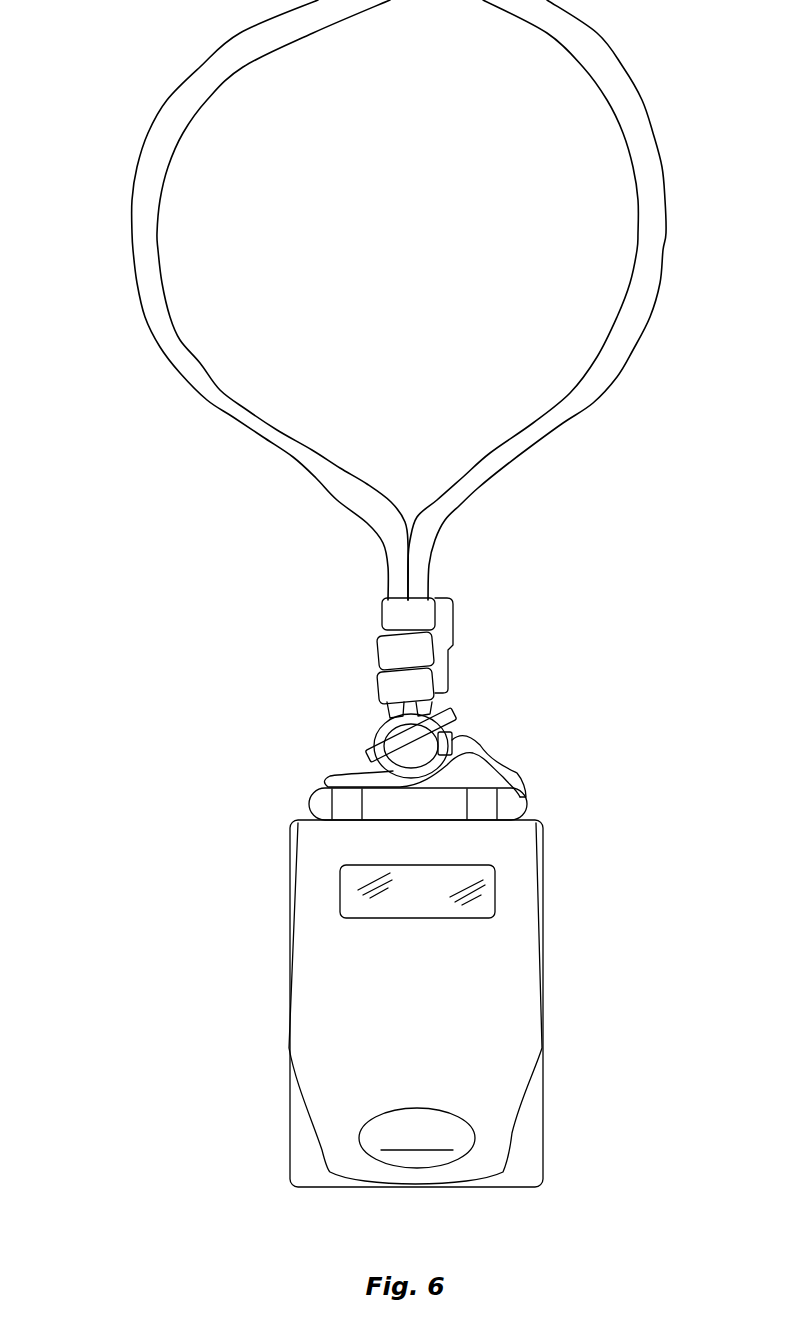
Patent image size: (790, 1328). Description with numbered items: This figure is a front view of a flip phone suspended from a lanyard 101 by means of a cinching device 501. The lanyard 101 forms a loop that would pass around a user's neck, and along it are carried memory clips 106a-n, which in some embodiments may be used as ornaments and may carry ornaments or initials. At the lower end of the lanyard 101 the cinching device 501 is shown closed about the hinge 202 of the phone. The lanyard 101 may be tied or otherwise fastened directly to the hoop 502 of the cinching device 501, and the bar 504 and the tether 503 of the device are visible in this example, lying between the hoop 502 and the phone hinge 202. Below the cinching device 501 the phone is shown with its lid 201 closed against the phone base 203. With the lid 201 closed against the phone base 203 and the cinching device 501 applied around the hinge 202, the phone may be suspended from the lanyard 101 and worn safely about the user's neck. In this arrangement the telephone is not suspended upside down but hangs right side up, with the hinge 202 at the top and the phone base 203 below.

The lanyard 101 is at (160, 412).
The memory clips 106a-n is at (452, 645).
The cinching device 501 is at (392, 721).
The hoop 502 is at (376, 768).
The tether 503 is at (523, 779).
The bar 504 is at (388, 766).
The lid 201 is at (357, 979).
The hinge 202 is at (430, 823).
The phone base 203 is at (290, 840).